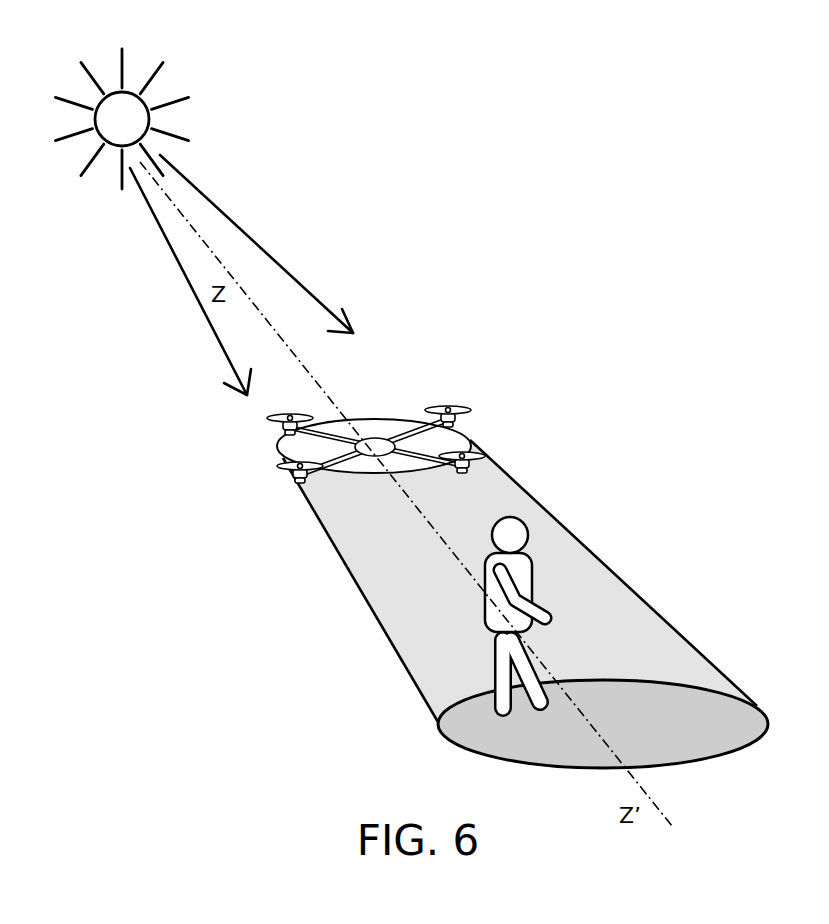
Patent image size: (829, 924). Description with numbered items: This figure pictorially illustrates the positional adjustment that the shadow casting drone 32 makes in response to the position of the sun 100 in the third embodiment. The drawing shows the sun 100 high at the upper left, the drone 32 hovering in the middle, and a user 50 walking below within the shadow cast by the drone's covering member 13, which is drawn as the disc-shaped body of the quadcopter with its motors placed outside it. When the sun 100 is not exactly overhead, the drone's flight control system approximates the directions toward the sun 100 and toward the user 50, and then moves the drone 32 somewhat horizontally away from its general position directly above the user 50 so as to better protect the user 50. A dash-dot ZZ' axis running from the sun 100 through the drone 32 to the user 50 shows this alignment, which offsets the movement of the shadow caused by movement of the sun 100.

The sun 100 is at (162, 101).
The covering member 13 is at (313, 407).
The drone 32 is at (227, 453).
The user 50 is at (569, 582).